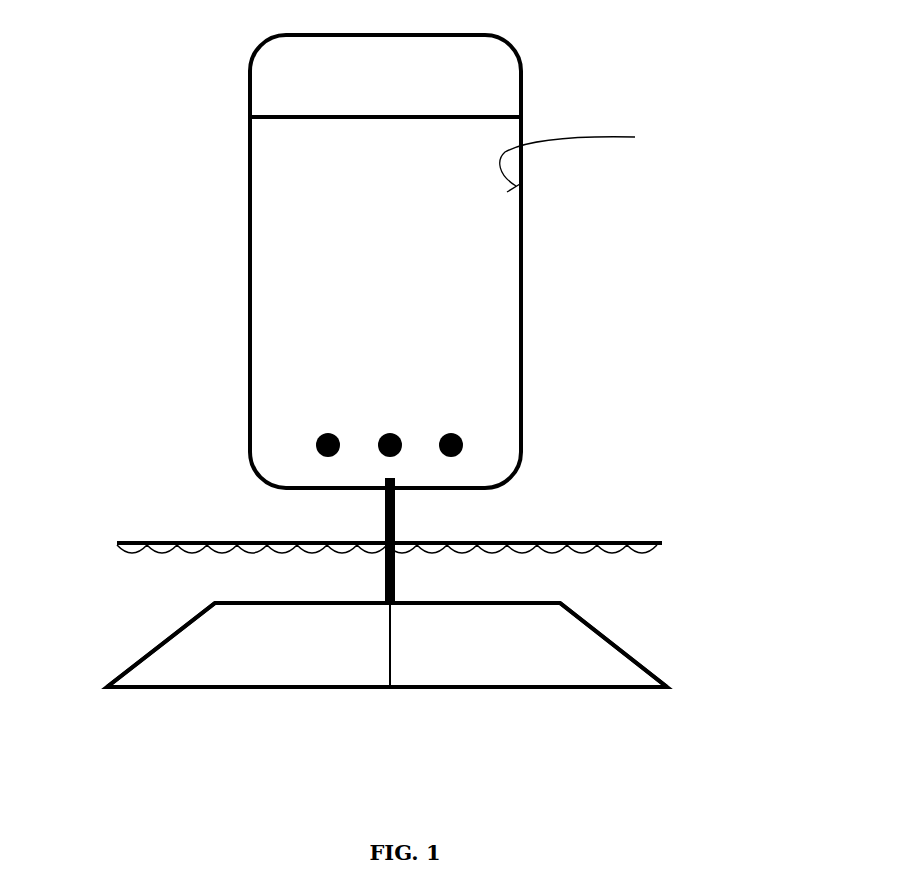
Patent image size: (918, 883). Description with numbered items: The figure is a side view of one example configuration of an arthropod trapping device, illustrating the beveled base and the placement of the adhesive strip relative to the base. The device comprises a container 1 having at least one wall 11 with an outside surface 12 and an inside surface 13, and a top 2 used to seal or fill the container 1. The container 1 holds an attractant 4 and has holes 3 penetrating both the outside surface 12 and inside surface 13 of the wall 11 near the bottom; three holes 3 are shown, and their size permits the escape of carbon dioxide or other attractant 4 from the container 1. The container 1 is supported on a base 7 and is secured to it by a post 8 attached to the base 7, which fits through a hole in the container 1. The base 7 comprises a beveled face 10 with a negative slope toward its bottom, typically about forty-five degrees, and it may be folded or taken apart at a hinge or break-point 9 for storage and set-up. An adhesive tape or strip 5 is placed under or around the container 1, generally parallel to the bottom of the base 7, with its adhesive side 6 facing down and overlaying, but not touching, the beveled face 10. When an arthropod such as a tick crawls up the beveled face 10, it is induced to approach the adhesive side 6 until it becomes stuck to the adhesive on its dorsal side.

The container 1 is at (527, 242).
The top 2 is at (483, 80).
The holes 3 is at (483, 443).
The attractant 4 is at (352, 262).
The adhesive tape or strip 5 is at (613, 527).
The adhesive side 6 is at (128, 555).
The base 7 is at (670, 687).
The post 8 is at (367, 503).
The hinge or break-point 9 is at (370, 662).
The beveled face 10 is at (170, 637).
The wall 11 is at (522, 309).
The outside surface 12 is at (528, 177).
The inside surface 13 is at (588, 162).